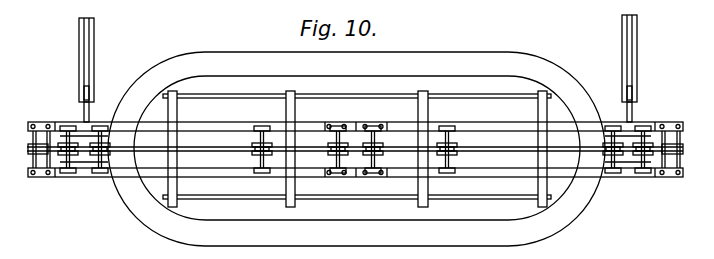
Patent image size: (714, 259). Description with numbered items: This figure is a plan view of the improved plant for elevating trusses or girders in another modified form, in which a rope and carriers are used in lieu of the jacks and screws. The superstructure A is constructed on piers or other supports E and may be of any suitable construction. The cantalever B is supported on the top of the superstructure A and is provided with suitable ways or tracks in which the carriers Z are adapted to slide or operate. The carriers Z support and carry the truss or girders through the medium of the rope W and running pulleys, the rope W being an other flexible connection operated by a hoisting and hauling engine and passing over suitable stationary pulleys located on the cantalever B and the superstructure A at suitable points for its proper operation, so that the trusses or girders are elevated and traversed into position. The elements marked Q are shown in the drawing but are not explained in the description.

The guide posts Q is at (94, 57).
The piers E is at (356, 149).
The superstructure A is at (249, 98).
The rope W is at (355, 149).
The cantalever B is at (126, 172).
The carrier Z is at (637, 170).